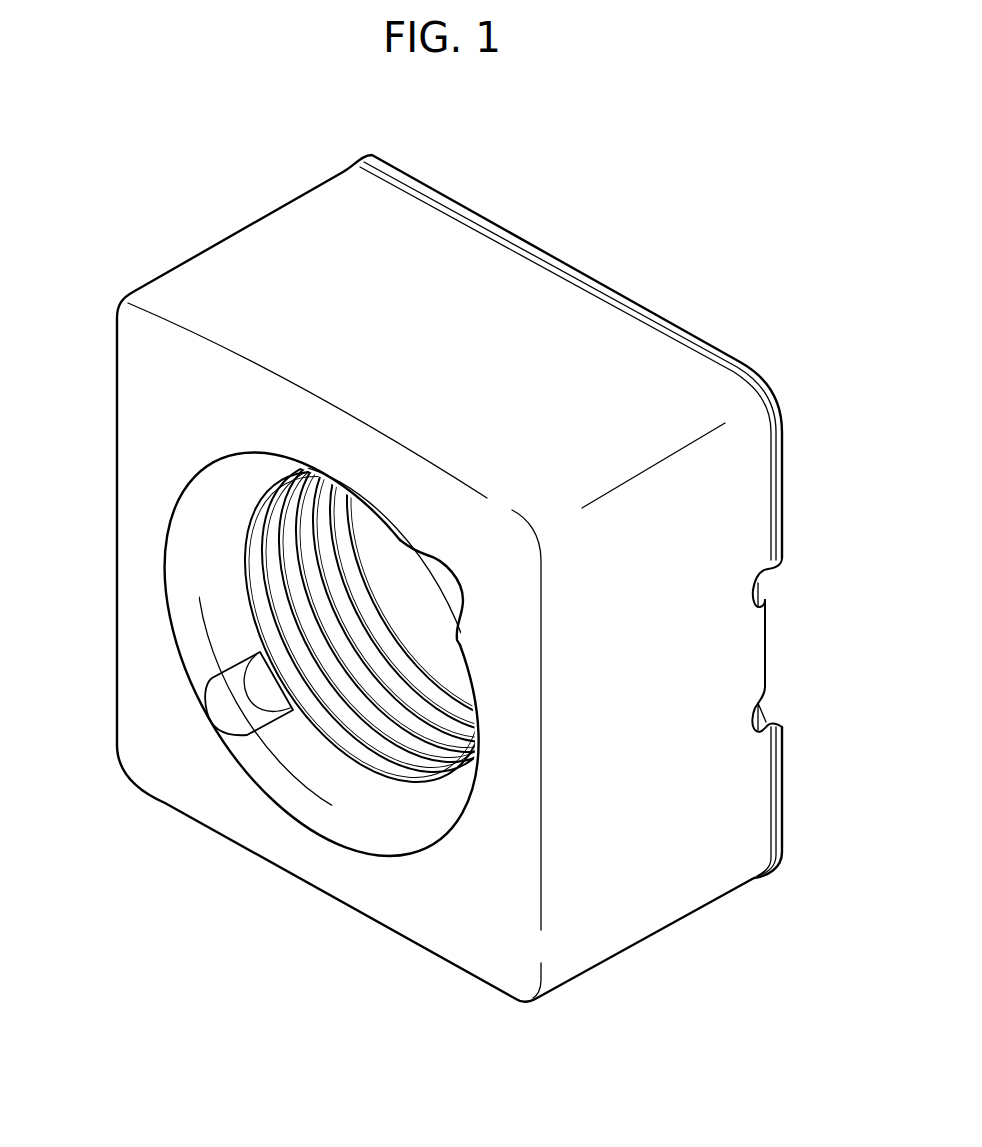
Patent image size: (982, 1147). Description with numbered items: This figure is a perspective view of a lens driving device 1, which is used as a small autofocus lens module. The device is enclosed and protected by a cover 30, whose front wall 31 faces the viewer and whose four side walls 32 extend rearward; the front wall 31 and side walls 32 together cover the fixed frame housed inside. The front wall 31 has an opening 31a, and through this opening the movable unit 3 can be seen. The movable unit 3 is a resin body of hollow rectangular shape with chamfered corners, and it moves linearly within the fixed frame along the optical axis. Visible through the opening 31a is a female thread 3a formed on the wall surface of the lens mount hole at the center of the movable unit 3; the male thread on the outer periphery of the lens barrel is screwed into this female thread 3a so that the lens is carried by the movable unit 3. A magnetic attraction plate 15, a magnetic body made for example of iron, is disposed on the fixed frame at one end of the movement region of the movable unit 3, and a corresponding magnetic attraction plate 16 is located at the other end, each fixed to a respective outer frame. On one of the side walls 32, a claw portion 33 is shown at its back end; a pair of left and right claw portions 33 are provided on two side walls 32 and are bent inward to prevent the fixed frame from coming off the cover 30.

The lens driving device 1 is at (266, 155).
The movable unit 3 is at (342, 797).
The female thread 3a is at (350, 613).
The magnetic attraction plate 15 is at (178, 551).
The magnetic attraction plate 16 is at (760, 585).
The cover 30 is at (430, 1042).
The front wall 31 is at (453, 945).
The opening 31a is at (458, 664).
The side wall 32 is at (623, 928).
The claw portion 33 is at (768, 658).